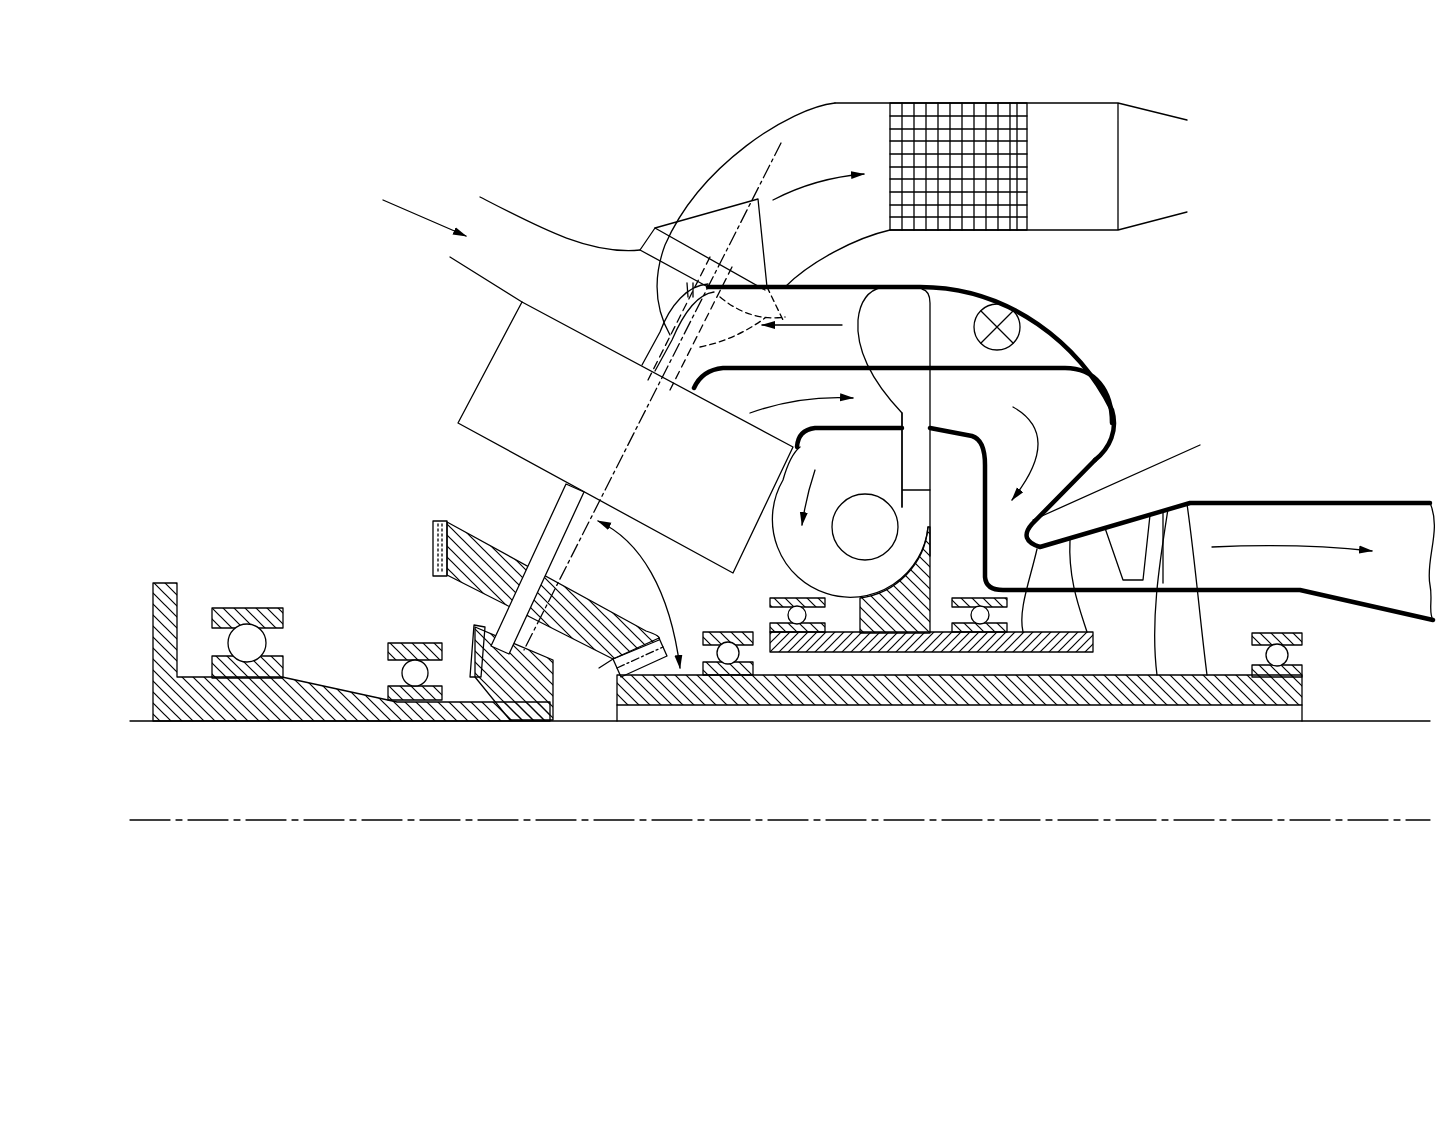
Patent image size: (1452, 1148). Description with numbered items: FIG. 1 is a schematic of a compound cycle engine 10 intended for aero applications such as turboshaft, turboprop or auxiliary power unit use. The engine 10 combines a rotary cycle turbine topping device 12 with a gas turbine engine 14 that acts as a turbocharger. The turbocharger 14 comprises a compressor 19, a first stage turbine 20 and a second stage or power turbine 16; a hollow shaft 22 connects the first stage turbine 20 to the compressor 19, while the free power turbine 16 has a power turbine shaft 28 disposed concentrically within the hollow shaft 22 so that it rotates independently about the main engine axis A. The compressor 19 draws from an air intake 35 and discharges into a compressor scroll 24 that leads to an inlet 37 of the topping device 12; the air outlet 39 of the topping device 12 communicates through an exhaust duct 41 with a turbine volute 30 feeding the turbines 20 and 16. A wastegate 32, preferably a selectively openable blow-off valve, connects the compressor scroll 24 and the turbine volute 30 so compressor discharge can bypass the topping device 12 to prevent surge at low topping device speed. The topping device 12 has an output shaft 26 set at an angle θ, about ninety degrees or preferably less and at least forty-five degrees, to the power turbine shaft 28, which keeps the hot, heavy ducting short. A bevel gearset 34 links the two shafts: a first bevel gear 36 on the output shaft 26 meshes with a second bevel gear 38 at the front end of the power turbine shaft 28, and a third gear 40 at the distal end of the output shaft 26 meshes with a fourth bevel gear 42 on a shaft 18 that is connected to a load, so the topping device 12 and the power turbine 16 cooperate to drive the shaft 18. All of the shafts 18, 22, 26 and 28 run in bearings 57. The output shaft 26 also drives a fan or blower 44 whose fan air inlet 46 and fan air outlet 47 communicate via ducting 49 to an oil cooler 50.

The compound cycle engine 10 is at (308, 392).
The rotary cycle turbine topping device 12 is at (547, 400).
The gas turbine engine 14 is at (918, 622).
The power turbine 16 is at (1178, 652).
The shaft 18 is at (310, 705).
The compressor 19 is at (880, 575).
The first stage turbine 20 is at (1057, 563).
The hollow shaft 22 is at (1010, 645).
The compressor scroll 24 is at (900, 315).
The output shaft 26 is at (557, 538).
The power turbine shaft 28 is at (982, 692).
The turbine volute 30 is at (1027, 520).
The wastegate 32 is at (1007, 327).
The bevel gearset 34 is at (650, 688).
The air intake 35 is at (833, 572).
The first bevel gear 36 is at (433, 543).
The inlet 37 is at (647, 357).
The second bevel gear 38 is at (599, 668).
The air outlet 39 is at (800, 437).
The third gear 40 is at (477, 658).
The exhaust duct 41 is at (970, 393).
The fourth bevel gear 42 is at (527, 700).
The fan or blower 44 is at (707, 268).
The fan air inlet 46 is at (488, 233).
The fan air outlet 47 is at (707, 207).
The ducting 49 is at (832, 100).
The oil cooler 50 is at (963, 140).
The bearings 57 is at (248, 640).
The main engine axis A is at (1293, 822).